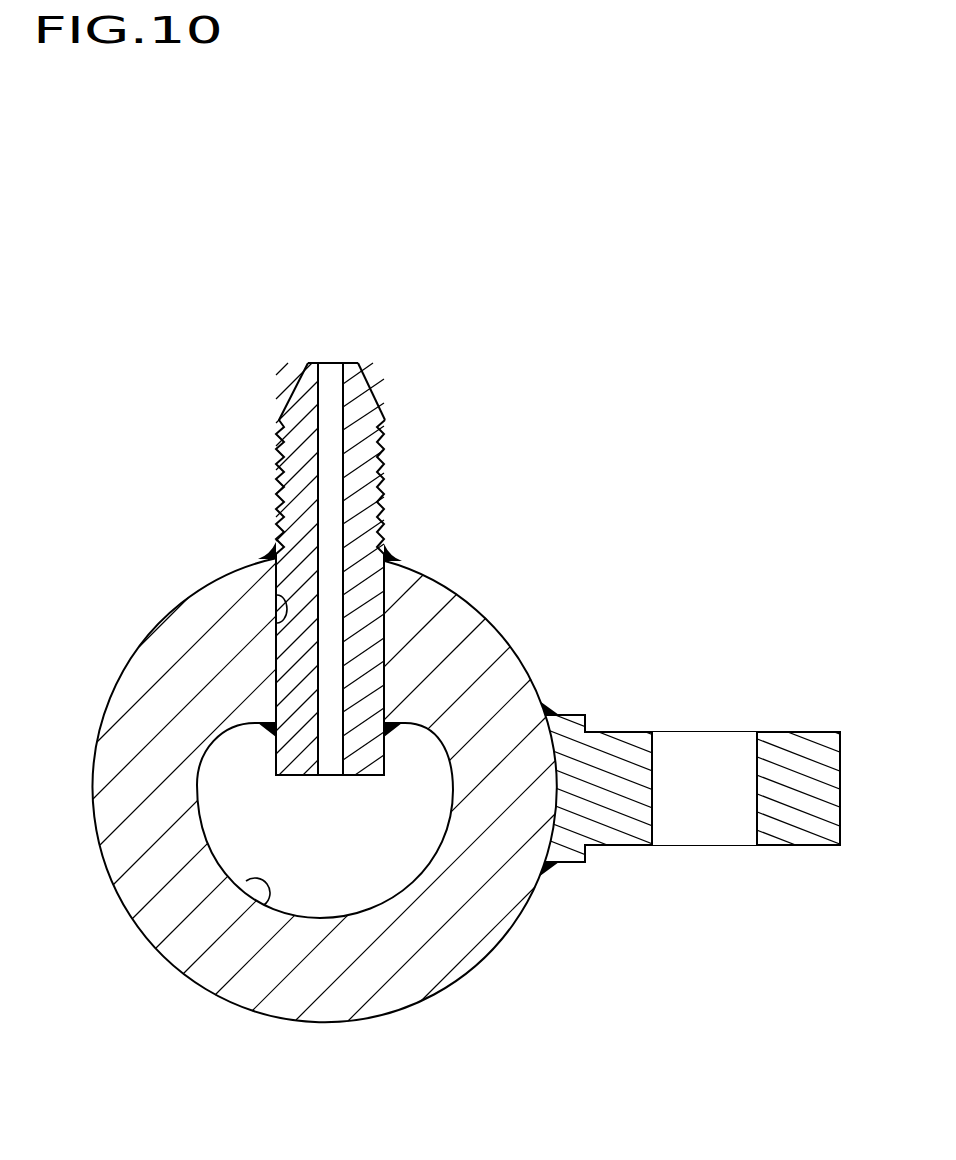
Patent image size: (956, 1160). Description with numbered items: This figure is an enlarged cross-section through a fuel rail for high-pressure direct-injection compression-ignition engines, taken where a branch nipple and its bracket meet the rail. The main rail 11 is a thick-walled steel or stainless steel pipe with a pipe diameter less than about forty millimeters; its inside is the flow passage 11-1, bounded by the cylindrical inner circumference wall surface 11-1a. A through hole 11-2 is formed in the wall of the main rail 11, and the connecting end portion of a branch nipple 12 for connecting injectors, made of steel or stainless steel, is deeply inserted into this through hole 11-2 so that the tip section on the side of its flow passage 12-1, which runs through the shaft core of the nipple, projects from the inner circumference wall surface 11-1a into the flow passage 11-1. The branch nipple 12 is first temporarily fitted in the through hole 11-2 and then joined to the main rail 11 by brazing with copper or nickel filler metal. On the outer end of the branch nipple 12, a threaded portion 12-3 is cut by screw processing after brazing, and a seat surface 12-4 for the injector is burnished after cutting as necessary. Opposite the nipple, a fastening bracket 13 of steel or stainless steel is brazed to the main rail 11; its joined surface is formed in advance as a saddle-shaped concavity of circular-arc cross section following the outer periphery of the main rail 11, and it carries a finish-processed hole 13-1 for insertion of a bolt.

The main rail 11 is at (315, 1014).
The flow passage 11-1 is at (240, 773).
The inner circumference wall surface 11-1a is at (253, 905).
The through hole 11-2 is at (277, 622).
The branch nipple for connecting injectors 12 is at (335, 527).
The flow passage 12-1 is at (331, 374).
The threaded portion 12-3 is at (385, 495).
The seat surface 12-4 is at (368, 385).
The fastening bracket 13 is at (691, 758).
The finish-processed hole 13-1 is at (695, 744).